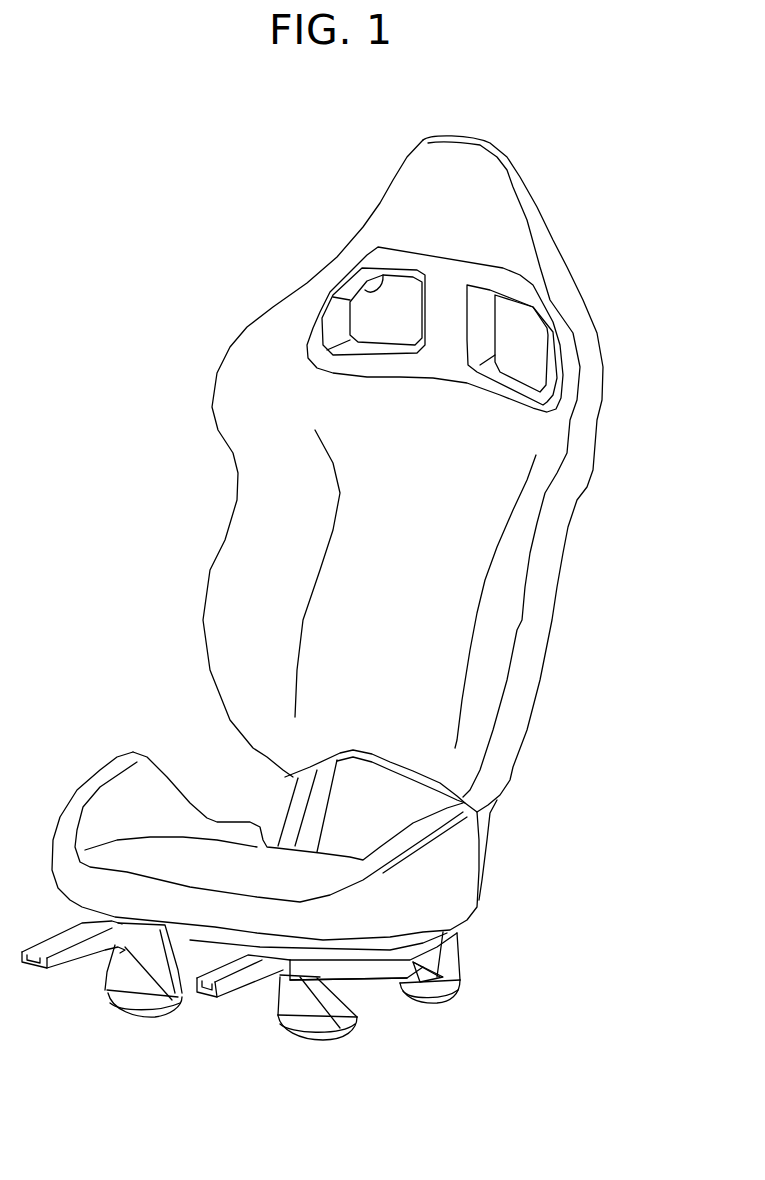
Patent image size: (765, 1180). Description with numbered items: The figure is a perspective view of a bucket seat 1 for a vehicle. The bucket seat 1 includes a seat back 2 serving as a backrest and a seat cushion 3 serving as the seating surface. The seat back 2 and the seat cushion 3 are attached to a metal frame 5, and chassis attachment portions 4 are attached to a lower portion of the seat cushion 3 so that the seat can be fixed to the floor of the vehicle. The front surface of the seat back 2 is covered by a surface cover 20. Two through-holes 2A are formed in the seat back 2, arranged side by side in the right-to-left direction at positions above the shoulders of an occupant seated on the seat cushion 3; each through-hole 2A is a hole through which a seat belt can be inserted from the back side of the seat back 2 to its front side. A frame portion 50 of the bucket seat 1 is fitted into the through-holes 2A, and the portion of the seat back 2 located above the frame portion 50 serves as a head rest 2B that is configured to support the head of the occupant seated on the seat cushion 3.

The bucket seat 1 is at (606, 138).
The seat back 2 is at (590, 555).
The through-hole 2A is at (367, 291).
The head rest 2B is at (490, 211).
The seat cushion 3 is at (502, 907).
The chassis attachment portion 4 is at (361, 1064).
The metal frame 5 is at (492, 828).
The surface cover 20 is at (247, 368).
The frame portion 50 is at (320, 322).